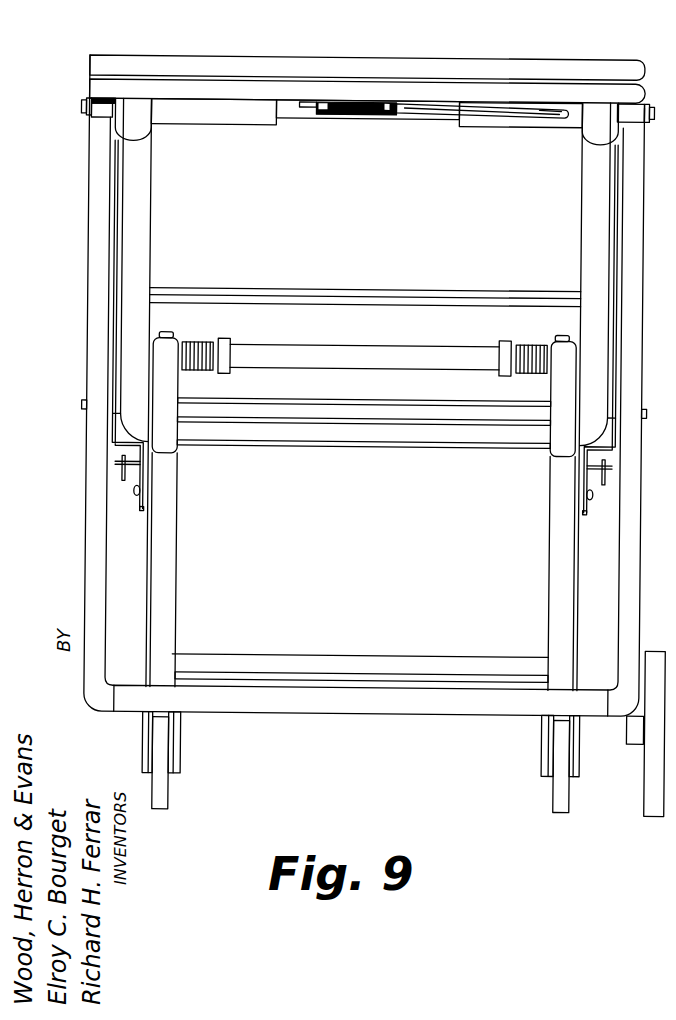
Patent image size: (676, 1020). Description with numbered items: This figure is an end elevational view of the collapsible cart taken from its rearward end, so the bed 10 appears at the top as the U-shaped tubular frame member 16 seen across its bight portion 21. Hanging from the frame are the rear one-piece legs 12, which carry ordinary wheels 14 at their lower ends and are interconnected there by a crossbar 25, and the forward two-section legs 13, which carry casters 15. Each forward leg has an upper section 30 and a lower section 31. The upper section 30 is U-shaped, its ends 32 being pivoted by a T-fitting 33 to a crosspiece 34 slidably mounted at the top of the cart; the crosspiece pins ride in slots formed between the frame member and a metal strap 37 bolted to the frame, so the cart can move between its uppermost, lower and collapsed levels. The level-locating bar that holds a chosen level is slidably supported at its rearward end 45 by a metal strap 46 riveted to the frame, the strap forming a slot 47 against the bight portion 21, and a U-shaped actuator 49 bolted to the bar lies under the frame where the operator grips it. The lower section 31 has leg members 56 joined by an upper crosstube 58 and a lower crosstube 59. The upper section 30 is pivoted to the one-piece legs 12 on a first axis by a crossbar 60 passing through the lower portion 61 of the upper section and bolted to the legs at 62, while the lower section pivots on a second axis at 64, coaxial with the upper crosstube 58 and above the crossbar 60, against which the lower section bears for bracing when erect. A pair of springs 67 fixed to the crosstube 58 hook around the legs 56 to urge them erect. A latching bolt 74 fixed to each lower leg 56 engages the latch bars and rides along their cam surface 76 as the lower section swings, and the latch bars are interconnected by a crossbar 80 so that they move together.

The bed 10 is at (80, 65).
The rear one-piece legs 12 is at (97, 352).
The forward two-section legs 13 is at (180, 462).
The wheels 14 is at (655, 815).
The casters 15 is at (178, 780).
The U-shaped tubular frame member 16 is at (92, 83).
The bight portion 21 is at (302, 90).
The crossbar 25 is at (390, 712).
The upper section 30 is at (152, 212).
The lower section 31 is at (178, 562).
The ends 32 is at (143, 143).
The T-fitting 33 is at (148, 128).
The crosspiece 34 is at (307, 122).
The metal strap 37 is at (97, 118).
The rearward end 45 is at (434, 113).
The metal strap 46 is at (370, 118).
The slot 47 is at (393, 100).
The U-shaped actuator 49 is at (543, 113).
The leg members 56 is at (168, 593).
The upper crosstube 58 is at (365, 352).
The lower crosstube 59 is at (347, 660).
The crossbar 60 is at (370, 407).
The lower portion 61 is at (382, 438).
The bolted connection 62 is at (84, 407).
The pivot axis 64 is at (117, 352).
The springs 67 is at (200, 344).
The latching bolt 74 is at (137, 492).
The cam surface 76 is at (148, 507).
The crossbar 80 is at (365, 292).